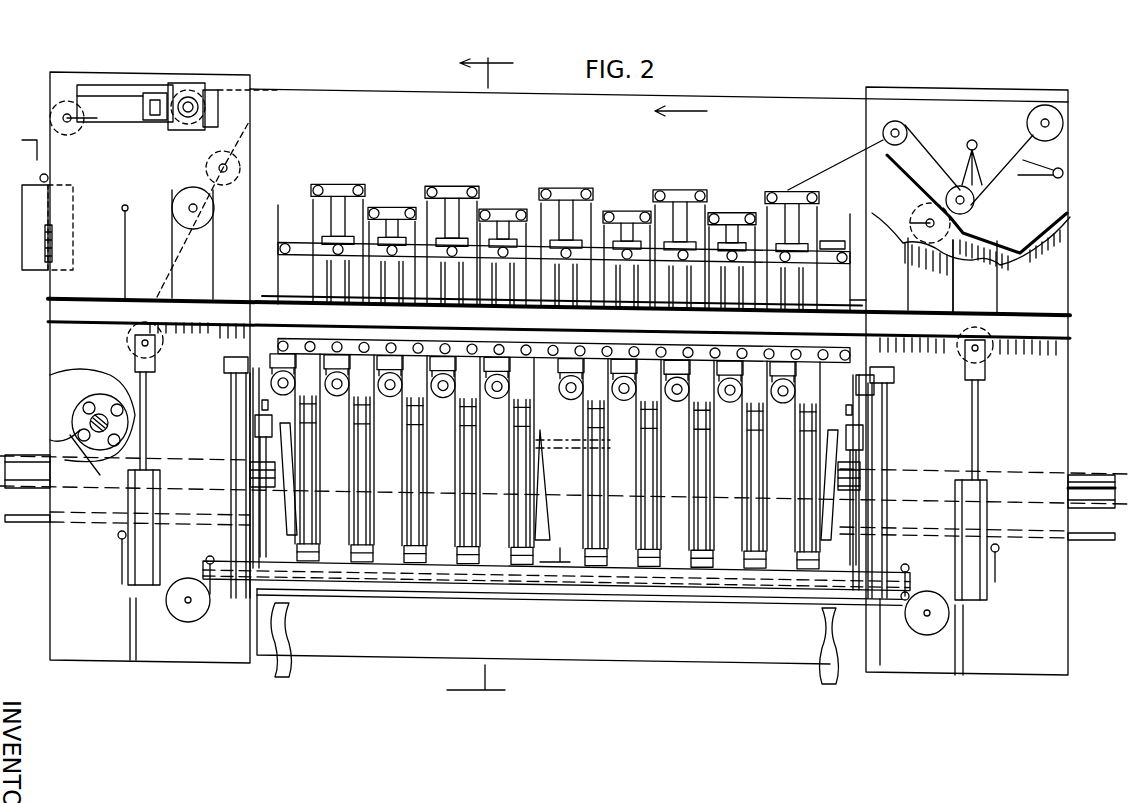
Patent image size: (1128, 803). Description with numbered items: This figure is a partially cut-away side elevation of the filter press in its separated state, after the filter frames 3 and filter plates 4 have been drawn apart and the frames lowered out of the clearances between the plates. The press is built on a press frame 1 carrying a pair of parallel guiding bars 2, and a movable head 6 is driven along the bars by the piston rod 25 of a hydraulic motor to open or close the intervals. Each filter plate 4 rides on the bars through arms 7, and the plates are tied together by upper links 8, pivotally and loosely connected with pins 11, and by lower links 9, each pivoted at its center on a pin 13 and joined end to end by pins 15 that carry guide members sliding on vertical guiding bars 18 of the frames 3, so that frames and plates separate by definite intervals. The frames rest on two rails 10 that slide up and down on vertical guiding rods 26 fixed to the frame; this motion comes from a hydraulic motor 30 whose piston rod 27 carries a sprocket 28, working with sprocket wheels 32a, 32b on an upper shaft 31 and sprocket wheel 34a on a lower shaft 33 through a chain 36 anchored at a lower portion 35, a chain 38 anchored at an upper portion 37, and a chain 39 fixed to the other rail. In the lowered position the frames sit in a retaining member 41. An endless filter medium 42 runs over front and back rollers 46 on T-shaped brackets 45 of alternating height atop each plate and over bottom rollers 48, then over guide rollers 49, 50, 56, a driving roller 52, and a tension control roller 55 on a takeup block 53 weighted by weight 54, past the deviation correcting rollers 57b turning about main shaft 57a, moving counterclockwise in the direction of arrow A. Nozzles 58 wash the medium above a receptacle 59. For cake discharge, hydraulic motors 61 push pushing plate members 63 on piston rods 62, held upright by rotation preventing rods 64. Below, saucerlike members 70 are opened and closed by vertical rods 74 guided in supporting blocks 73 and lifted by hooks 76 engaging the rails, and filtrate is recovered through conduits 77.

The press frame 1 is at (50, 613).
The guiding bars 2 is at (748, 333).
The filter frames 3 is at (408, 508).
The filter plates 4 is at (469, 378).
The movable head 6 is at (846, 237).
The arms 7 is at (338, 280).
The upper links 8 is at (645, 265).
The lower links 9 is at (635, 382).
The rails 10 is at (560, 582).
The pin 11 is at (732, 244).
The pin 13 is at (728, 390).
The pins 15 is at (683, 390).
The guiding bar 18 is at (414, 443).
The piston rod 25 is at (866, 300).
The vertical guiding rods 26 is at (250, 470).
The piston rod 27 is at (146, 394).
The sprocket 28 is at (158, 340).
The hydraulic motor 30 is at (126, 580).
The upper shaft 31 is at (190, 207).
The sprocket wheel 32a is at (192, 188).
The sprocket wheel 32b is at (925, 215).
The lower shaft 33 is at (208, 560).
The sprocket wheel 34a is at (185, 605).
The lower portion of frame 35 is at (118, 539).
The chain 36 is at (230, 432).
The upper portion of frame 37 is at (123, 205).
The chain 38 is at (125, 260).
The chain 39 is at (972, 276).
The retaining member 41 is at (438, 556).
The filter medium 42 is at (313, 178).
The T-shaped bracket 45 is at (372, 206).
The front and back rollers 46 is at (318, 182).
The roller 48 is at (442, 396).
The guide roller 49 is at (880, 129).
The guide roller 50 is at (955, 190).
The driving roller 52 is at (1048, 120).
The takeup block 53 is at (180, 90).
The weight 54 is at (33, 188).
The tension control roller 55 is at (173, 108).
The guide roller 56 is at (233, 165).
The main shaft 57a is at (73, 424).
The rollers 57b is at (60, 380).
The nozzles 58 is at (972, 140).
The receptacle 59 is at (1045, 247).
The hydraulic motors 61 is at (1080, 480).
The piston rods 62 is at (838, 470).
The pushing plate members 63 is at (285, 485).
The rotation preventing rods 64 is at (10, 524).
The saucerlike members 70 is at (678, 656).
The supporting blocks 73 is at (266, 427).
The vertical rod 74 is at (830, 450).
The hook 76 is at (845, 420).
The conduits 77 is at (288, 620).
The arrow A is at (695, 110).